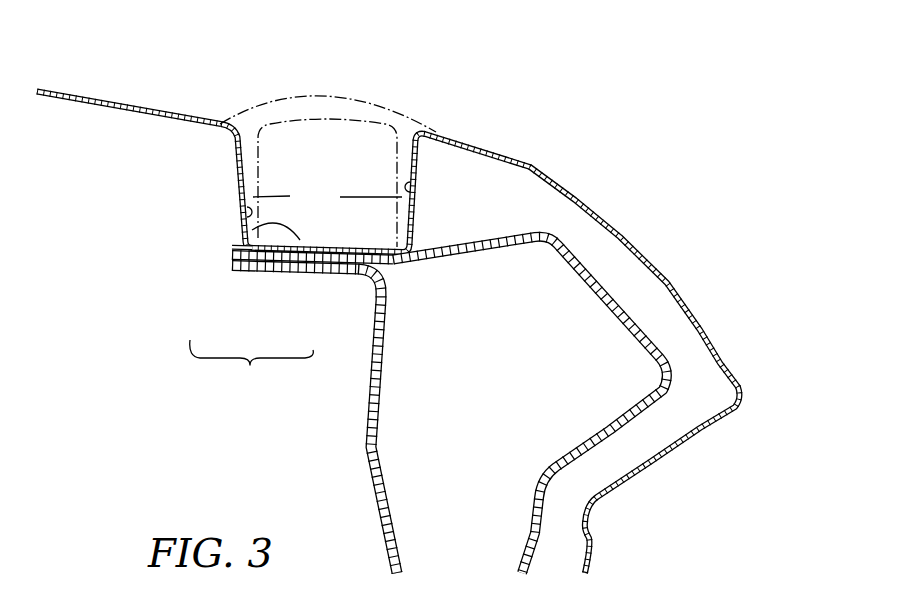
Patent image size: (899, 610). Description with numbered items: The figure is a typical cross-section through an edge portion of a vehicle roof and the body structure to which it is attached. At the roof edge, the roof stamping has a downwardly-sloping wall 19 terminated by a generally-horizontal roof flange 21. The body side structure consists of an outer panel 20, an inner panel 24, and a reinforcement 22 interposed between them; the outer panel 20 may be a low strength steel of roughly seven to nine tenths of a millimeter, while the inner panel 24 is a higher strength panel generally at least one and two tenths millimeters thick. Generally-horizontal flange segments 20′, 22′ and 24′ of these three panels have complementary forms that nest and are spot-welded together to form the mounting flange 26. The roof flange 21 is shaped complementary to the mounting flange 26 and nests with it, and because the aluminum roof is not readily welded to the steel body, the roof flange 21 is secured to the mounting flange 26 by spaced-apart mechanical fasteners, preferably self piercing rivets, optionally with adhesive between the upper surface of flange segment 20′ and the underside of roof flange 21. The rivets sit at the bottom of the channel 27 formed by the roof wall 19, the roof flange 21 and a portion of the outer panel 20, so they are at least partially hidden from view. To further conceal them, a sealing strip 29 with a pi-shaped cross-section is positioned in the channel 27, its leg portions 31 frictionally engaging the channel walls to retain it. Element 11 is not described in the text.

The roof panel 11 is at (113, 97).
The downwardly-sloping wall 19 is at (243, 224).
The outer panel 20 is at (632, 238).
The flange segment 20′ is at (228, 272).
The roof flange 21 is at (248, 234).
The reinforcement 22 is at (637, 318).
The flange segment 22′ is at (274, 274).
The inner panel 24 is at (383, 388).
The flange segment 24′ is at (312, 277).
The mounting flange 26 is at (250, 370).
The channel 27 is at (343, 160).
The sealing strip 29 is at (328, 108).
The leg portions 31 is at (340, 197).